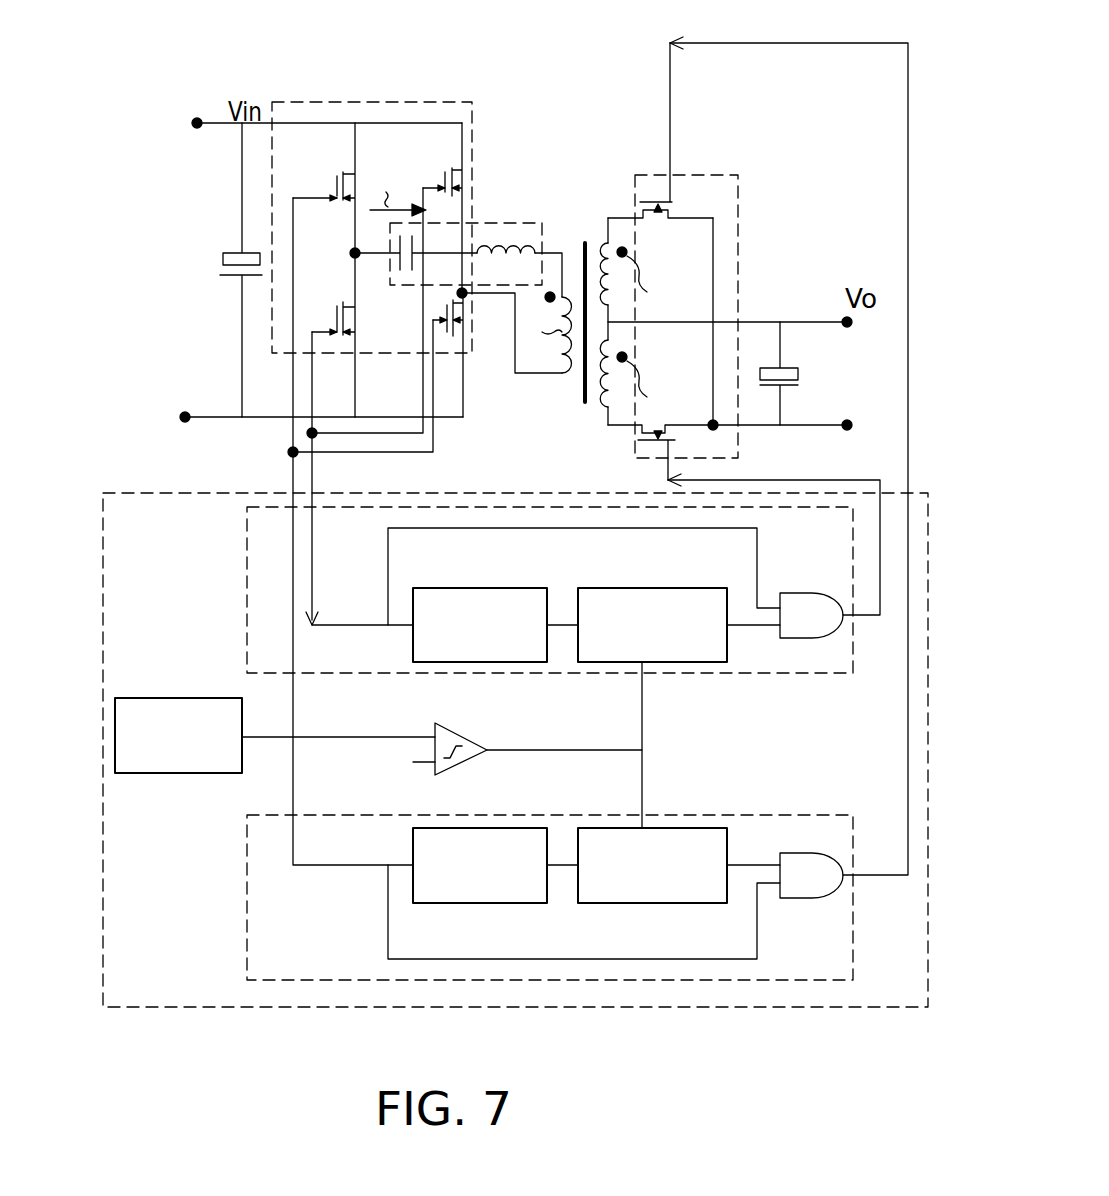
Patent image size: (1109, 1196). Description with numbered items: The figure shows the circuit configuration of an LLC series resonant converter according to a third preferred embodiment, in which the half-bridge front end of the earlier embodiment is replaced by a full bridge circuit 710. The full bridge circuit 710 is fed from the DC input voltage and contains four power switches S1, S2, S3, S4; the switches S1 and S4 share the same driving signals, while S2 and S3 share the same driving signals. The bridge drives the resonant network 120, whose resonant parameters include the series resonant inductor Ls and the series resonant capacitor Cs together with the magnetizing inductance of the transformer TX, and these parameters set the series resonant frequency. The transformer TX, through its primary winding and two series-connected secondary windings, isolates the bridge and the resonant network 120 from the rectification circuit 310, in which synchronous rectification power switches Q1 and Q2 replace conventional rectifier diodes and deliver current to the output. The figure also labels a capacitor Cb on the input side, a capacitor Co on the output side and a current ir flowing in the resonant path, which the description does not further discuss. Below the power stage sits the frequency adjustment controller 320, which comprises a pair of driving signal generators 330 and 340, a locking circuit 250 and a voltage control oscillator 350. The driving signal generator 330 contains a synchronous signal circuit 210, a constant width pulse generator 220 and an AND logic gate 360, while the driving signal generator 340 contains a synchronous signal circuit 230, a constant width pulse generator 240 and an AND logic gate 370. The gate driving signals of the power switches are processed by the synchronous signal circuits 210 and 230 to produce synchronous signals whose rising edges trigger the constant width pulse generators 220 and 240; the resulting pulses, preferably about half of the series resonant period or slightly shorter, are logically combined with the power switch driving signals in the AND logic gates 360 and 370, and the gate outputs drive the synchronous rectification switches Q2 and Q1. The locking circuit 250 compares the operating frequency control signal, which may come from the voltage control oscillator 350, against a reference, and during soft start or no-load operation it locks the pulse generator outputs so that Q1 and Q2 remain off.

The full bridge circuit 710 is at (403, 235).
The resonant network 120 is at (469, 240).
The rectification circuit 310 is at (727, 261).
The frequency adjustment controller 320 is at (103, 752).
The driving signal generator 330 is at (247, 590).
The driving signal generator 340 is at (247, 896).
The voltage control oscillator 350 is at (175, 773).
The AND logic gate 360 is at (793, 593).
The AND logic gate 370 is at (795, 900).
The synchronous signal circuit 210 is at (480, 588).
The constant width pulse generator 220 is at (644, 588).
The synchronous signal circuit 230 is at (497, 903).
The constant width pulse generator 240 is at (656, 903).
The locking circuit 250 is at (462, 733).
The power switch S1 is at (357, 170).
The power switch S2 is at (358, 326).
The power switch S3 is at (457, 170).
The power switch S4 is at (463, 326).
The input capacitor Cb is at (222, 259).
The series resonant capacitor Cs is at (390, 270).
The series resonant inductor Ls is at (505, 244).
The transformer TX is at (572, 319).
The synchronous rectification power switch Q1 is at (668, 211).
The synchronous rectification power switch Q2 is at (671, 436).
The output capacitor Co is at (800, 375).
The resonant current ir is at (398, 190).